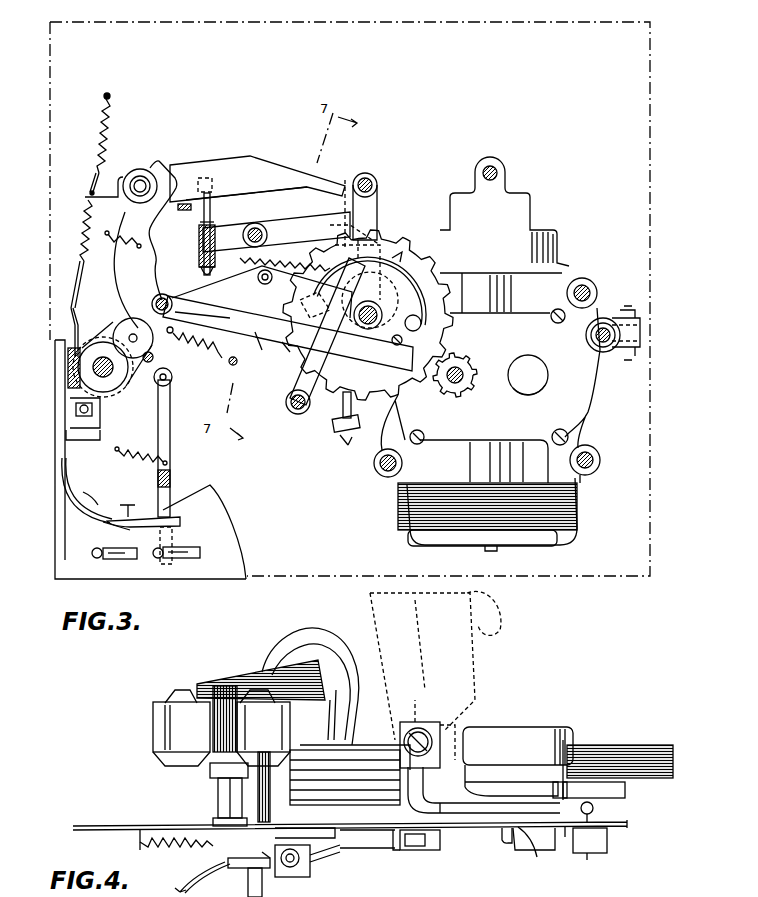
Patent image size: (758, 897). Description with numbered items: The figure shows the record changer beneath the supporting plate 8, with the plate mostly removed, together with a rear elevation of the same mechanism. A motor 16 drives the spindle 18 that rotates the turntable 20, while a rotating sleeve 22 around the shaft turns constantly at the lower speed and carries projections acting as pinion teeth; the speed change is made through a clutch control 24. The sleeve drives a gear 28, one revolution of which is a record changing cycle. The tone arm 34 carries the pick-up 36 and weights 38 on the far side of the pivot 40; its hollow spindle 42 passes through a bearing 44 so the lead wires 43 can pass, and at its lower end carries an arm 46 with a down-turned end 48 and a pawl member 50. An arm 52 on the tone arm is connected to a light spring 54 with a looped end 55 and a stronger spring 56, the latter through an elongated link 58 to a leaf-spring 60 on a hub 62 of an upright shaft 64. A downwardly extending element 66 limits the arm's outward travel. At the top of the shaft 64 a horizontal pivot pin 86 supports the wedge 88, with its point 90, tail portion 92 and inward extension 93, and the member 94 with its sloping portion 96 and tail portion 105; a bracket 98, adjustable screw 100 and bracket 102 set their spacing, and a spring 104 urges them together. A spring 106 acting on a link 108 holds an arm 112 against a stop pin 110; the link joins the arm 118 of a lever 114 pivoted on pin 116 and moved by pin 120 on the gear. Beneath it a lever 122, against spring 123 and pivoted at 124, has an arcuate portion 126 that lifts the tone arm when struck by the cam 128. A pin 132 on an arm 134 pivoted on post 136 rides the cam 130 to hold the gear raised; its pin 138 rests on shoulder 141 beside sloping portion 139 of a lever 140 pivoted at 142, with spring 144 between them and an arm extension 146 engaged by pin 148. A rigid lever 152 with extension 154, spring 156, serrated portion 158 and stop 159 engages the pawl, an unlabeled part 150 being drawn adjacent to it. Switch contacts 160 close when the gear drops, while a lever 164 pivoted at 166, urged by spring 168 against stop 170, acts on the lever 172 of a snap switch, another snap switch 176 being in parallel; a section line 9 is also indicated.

In FIG. 3, the supporting plate 8 is at (650, 80).
In FIG. 4, the supporting plate 8 is at (100, 825).
In FIG. 3, the section line 9 is at (345, 440).
In FIG. 3, the motor 16 is at (590, 402).
In FIG. 3, the spindle 18 is at (462, 372).
In FIG. 4, the turntable 20 is at (625, 795).
In FIG. 3, the rotating sleeve 22 is at (476, 392).
In FIG. 3, the clutch control 24 is at (632, 340).
In FIG. 3, the gear 28 is at (450, 327).
In FIG. 4, the tone arm 34 is at (252, 672).
In FIG. 4, the pick-up 36 is at (312, 640).
In FIG. 4, the weights 38 is at (235, 700).
In FIG. 4, the pivot 40 is at (237, 722).
In FIG. 3, the spindle 42 is at (140, 169).
In FIG. 4, the spindle 42 is at (220, 775).
In FIG. 4, the lead wires 43 is at (195, 884).
In FIG. 4, the bearing 44 is at (220, 800).
In FIG. 3, the arm 46 is at (250, 159).
In FIG. 3, the down-turned end 48 is at (348, 182).
In FIG. 3, the pawl member 50 is at (203, 192).
In FIG. 4, the pawl member 50 is at (261, 849).
In FIG. 3, the arm 52 is at (85, 197).
In FIG. 3, the spring 54 is at (100, 137).
In FIG. 4, the spring 54 is at (166, 836).
In FIG. 3, the slotted or looped end 55 is at (92, 180).
In FIG. 3, the spring 56 is at (80, 240).
In FIG. 3, the elongated link 58 is at (73, 287).
In FIG. 3, the leaf-spring 60 is at (76, 323).
In FIG. 4, the leaf-spring 60 is at (437, 846).
In FIG. 3, the hub 62 is at (122, 385).
In FIG. 3, the upright shaft 64 is at (113, 368).
In FIG. 4, the upright shaft 64 is at (423, 846).
In FIG. 3, the downwardly extending element 66 is at (183, 212).
In FIG. 4, the downwardly extending element 66 is at (270, 826).
In FIG. 3, the horizontal pivot pin 86 is at (60, 362).
In FIG. 4, the horizontal pivot pin 86 is at (420, 738).
In FIG. 3, the wedge 88 is at (64, 482).
In FIG. 4, the wedge 88 is at (500, 797).
In FIG. 3, the point 90 is at (125, 503).
In FIG. 4, the point 90 is at (556, 788).
In FIG. 4, the tail portion 92 is at (537, 855).
In FIG. 3, the inward extension 93 is at (88, 495).
In FIG. 4, the inward extension 93 is at (502, 836).
In FIG. 3, the member 94 is at (148, 512).
In FIG. 4, the member 94 is at (510, 730).
In FIG. 3, the sloping portion 96 is at (105, 523).
In FIG. 4, the sloping portion 96 is at (566, 785).
In FIG. 3, the bracket 98 is at (78, 402).
In FIG. 3, the adjustable screw 100 is at (76, 412).
In FIG. 3, the bracket 102 is at (95, 420).
In FIG. 3, the spring 104 is at (70, 382).
In FIG. 4, the tail portion 105 is at (400, 722).
In FIG. 3, the spring 106 is at (202, 349).
In FIG. 3, the link 108 is at (213, 297).
In FIG. 4, the link 108 is at (360, 850).
In FIG. 3, the stop pin 110 is at (153, 358).
In FIG. 3, the arm 112 is at (118, 336).
In FIG. 4, the arm 112 is at (405, 852).
In FIG. 3, the lever 114 is at (300, 372).
In FIG. 3, the pin 116 is at (286, 403).
In FIG. 3, the arm 118 is at (285, 283).
In FIG. 3, the pin 120 is at (410, 320).
In FIG. 3, the lever 122 is at (272, 346).
In FIG. 3, the spring 123 is at (120, 243).
In FIG. 3, the pivot 124 is at (152, 307).
In FIG. 3, the arcuate portion 126 is at (168, 168).
In FIG. 3, the cam 128 is at (398, 258).
In FIG. 3, the cam 130 is at (327, 331).
In FIG. 3, the pin 132 is at (372, 300).
In FIG. 3, the arm 134 is at (378, 212).
In FIG. 3, the post 136 is at (370, 175).
In FIG. 3, the pin 138 is at (378, 225).
In FIG. 3, the sloping portion 139 is at (352, 213).
In FIG. 3, the lever 140 is at (297, 224).
In FIG. 4, the lever 140 is at (265, 892).
In FIG. 3, the shoulder 141 is at (349, 257).
In FIG. 3, the pivot 142 is at (258, 224).
In FIG. 3, the spring 144 is at (240, 259).
In FIG. 3, the arm extension 146 is at (452, 275).
In FIG. 3, the pin 148 is at (311, 305).
In FIG. 3, the latch 150 is at (199, 246).
In FIG. 4, the latch 150 is at (300, 868).
In FIG. 3, the rigid lever 152 is at (212, 208).
In FIG. 4, the rigid lever 152 is at (243, 868).
In FIG. 3, the extension 154 is at (204, 265).
In FIG. 4, the extension 154 is at (318, 828).
In FIG. 3, the spring 156 is at (205, 275).
In FIG. 4, the spring 156 is at (332, 857).
In FIG. 3, the serrated portion 158 is at (211, 192).
In FIG. 4, the serrated portion 158 is at (225, 860).
In FIG. 3, the stop 159 is at (215, 222).
In FIG. 3, the switch contacts 160 is at (340, 420).
In FIG. 3, the lever 164 is at (172, 452).
In FIG. 3, the pivot 166 is at (172, 378).
In FIG. 3, the spring 168 is at (150, 460).
In FIG. 3, the stop 170 is at (158, 532).
In FIG. 3, the lever 172 is at (160, 556).
In FIG. 3, the snap switch 176 is at (96, 556).